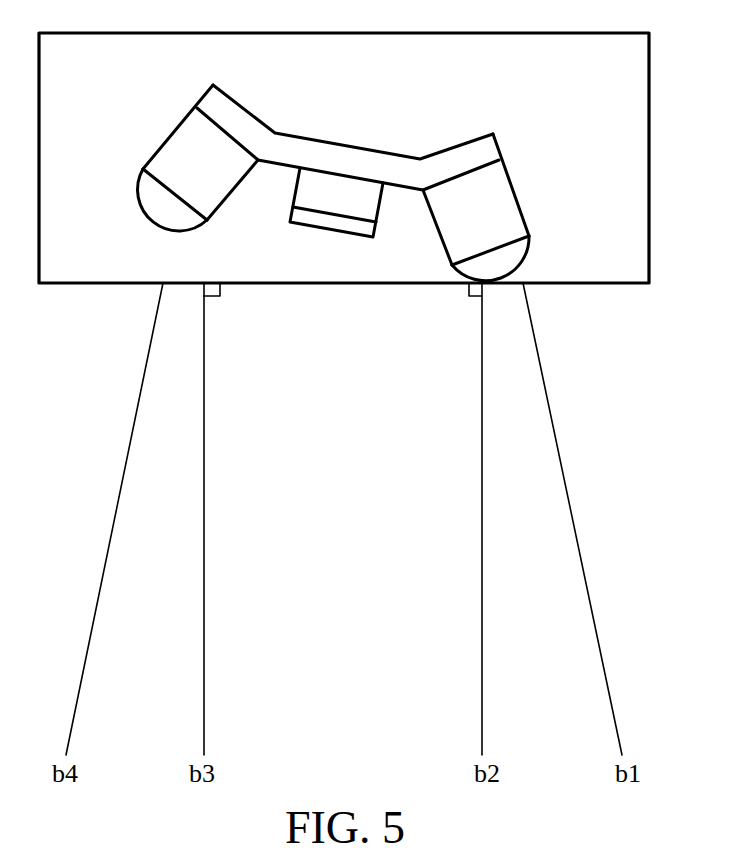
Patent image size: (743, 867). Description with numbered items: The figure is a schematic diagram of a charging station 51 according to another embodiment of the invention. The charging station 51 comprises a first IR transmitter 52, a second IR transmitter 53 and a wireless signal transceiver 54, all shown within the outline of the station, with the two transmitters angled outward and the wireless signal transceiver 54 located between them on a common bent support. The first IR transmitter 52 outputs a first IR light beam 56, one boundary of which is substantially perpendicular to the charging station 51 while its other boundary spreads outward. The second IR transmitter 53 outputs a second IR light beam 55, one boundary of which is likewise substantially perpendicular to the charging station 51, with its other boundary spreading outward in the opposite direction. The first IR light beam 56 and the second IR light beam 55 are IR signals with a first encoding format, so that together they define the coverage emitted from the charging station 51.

The charging station 51 is at (650, 157).
The first IR transmitter 52 is at (175, 143).
The second IR transmitter 53 is at (507, 202).
The wireless signal transceiver 54 is at (338, 198).
The second IR light beam 55 is at (572, 488).
The first IR light beam 56 is at (115, 488).